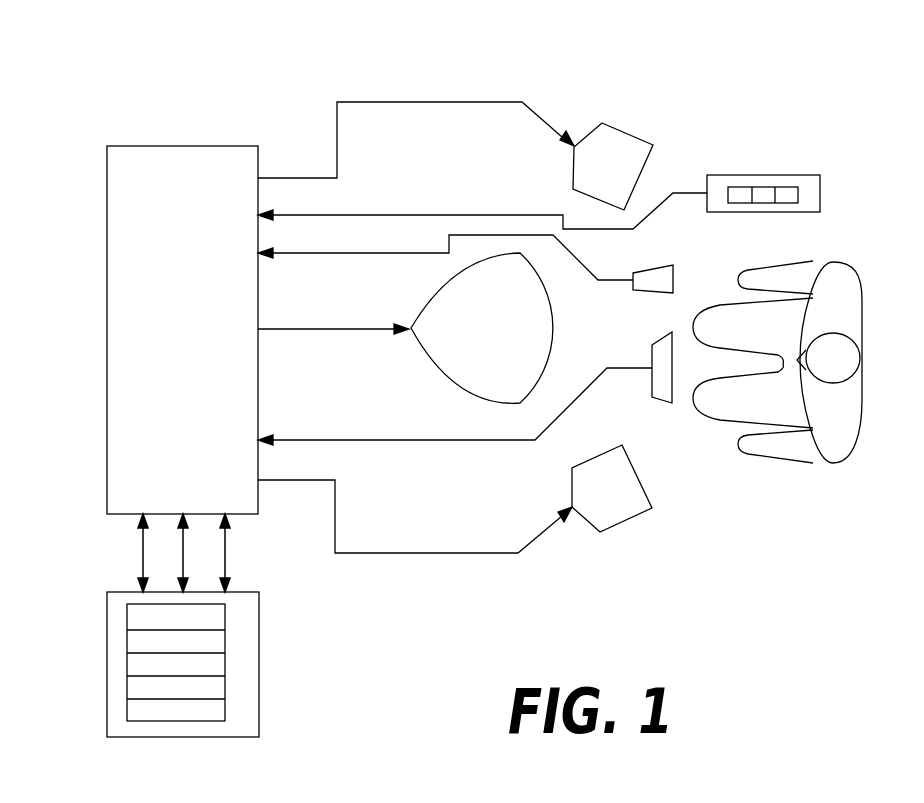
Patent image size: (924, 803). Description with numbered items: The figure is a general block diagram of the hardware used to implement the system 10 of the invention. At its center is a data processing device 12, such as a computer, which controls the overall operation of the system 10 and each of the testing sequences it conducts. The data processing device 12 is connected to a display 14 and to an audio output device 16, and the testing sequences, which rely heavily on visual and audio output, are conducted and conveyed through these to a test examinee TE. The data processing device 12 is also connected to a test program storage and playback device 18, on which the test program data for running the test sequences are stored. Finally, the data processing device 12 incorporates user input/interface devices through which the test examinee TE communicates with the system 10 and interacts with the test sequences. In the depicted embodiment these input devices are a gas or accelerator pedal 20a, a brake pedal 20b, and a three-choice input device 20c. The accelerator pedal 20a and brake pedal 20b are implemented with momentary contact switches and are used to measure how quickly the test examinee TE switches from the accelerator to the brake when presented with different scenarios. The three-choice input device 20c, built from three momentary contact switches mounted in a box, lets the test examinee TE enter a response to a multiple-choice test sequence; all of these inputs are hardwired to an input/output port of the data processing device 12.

The system 10 is at (468, 67).
The data processing device 12 is at (107, 178).
The display 14 is at (420, 345).
The audio output device 16 is at (641, 136).
The test program storage and playback device 18 is at (107, 632).
The gas or accelerator pedal 20a is at (655, 293).
The brake pedal 20b is at (658, 403).
The three-choice input device 20c is at (823, 195).
The test examinee TE is at (862, 405).